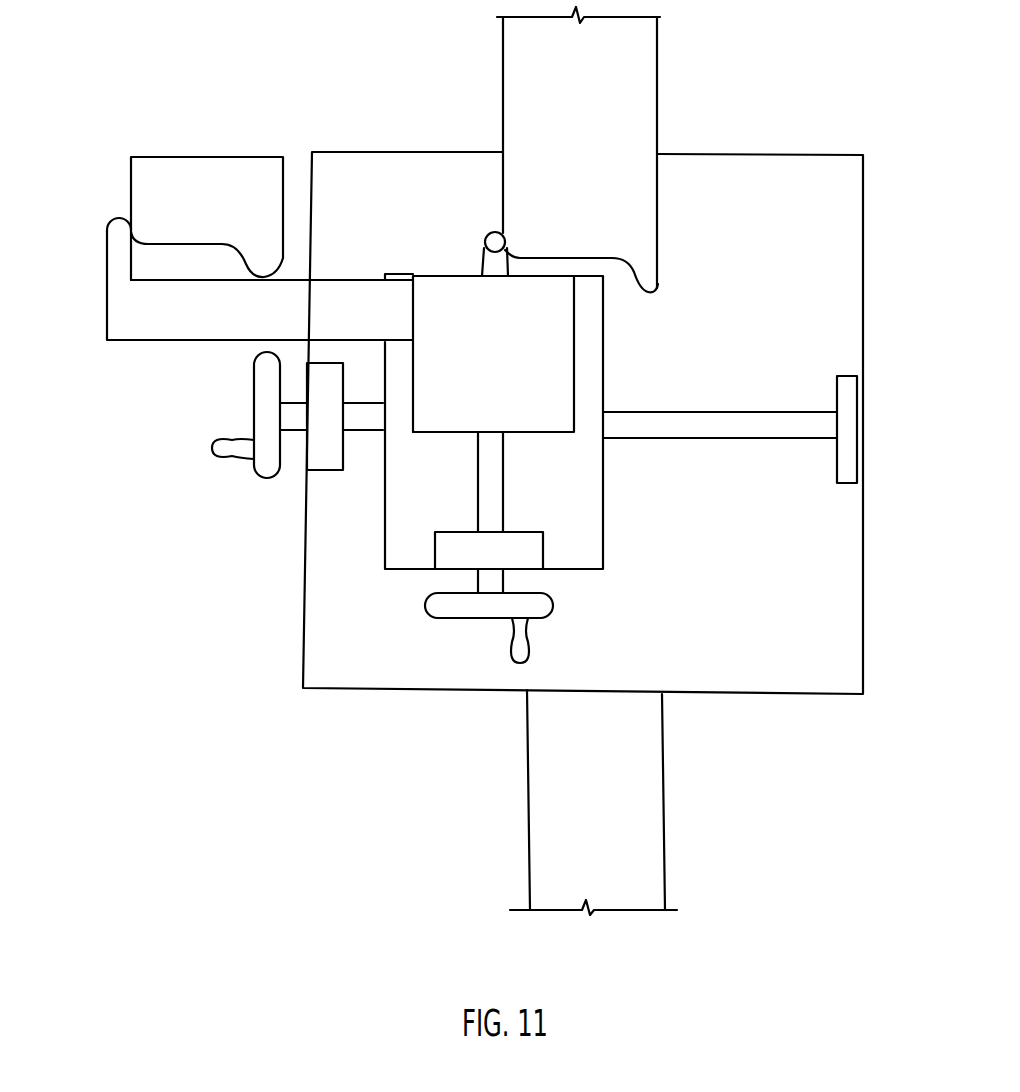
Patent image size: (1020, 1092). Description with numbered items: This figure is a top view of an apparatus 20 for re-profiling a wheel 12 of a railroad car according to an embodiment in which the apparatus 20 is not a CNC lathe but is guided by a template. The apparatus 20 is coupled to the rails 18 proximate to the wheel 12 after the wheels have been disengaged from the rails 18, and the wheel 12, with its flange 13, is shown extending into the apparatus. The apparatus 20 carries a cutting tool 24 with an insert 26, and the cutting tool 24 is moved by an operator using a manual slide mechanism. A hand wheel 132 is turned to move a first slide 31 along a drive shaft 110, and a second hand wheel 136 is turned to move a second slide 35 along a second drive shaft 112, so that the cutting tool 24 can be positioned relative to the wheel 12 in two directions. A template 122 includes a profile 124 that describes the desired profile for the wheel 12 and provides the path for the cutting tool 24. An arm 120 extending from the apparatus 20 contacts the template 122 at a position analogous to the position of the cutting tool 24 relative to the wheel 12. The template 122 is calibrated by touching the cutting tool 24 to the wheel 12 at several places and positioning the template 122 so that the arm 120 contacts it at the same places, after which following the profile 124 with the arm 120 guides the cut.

The wheel 12 is at (527, 82).
The flange 13 is at (660, 293).
The rails 18 is at (652, 867).
The apparatus 20 is at (288, 729).
The cutting tool 24 is at (488, 263).
The insert 26 is at (493, 232).
The first slide 31 is at (405, 550).
The second slide 35 is at (440, 425).
The drive shaft 110 is at (810, 422).
The drive shaft 112 is at (487, 497).
The arm 120 is at (120, 320).
The template 122 is at (182, 170).
The profile 124 is at (167, 247).
The hand wheel 132 is at (263, 392).
The second hand wheel 136 is at (466, 605).